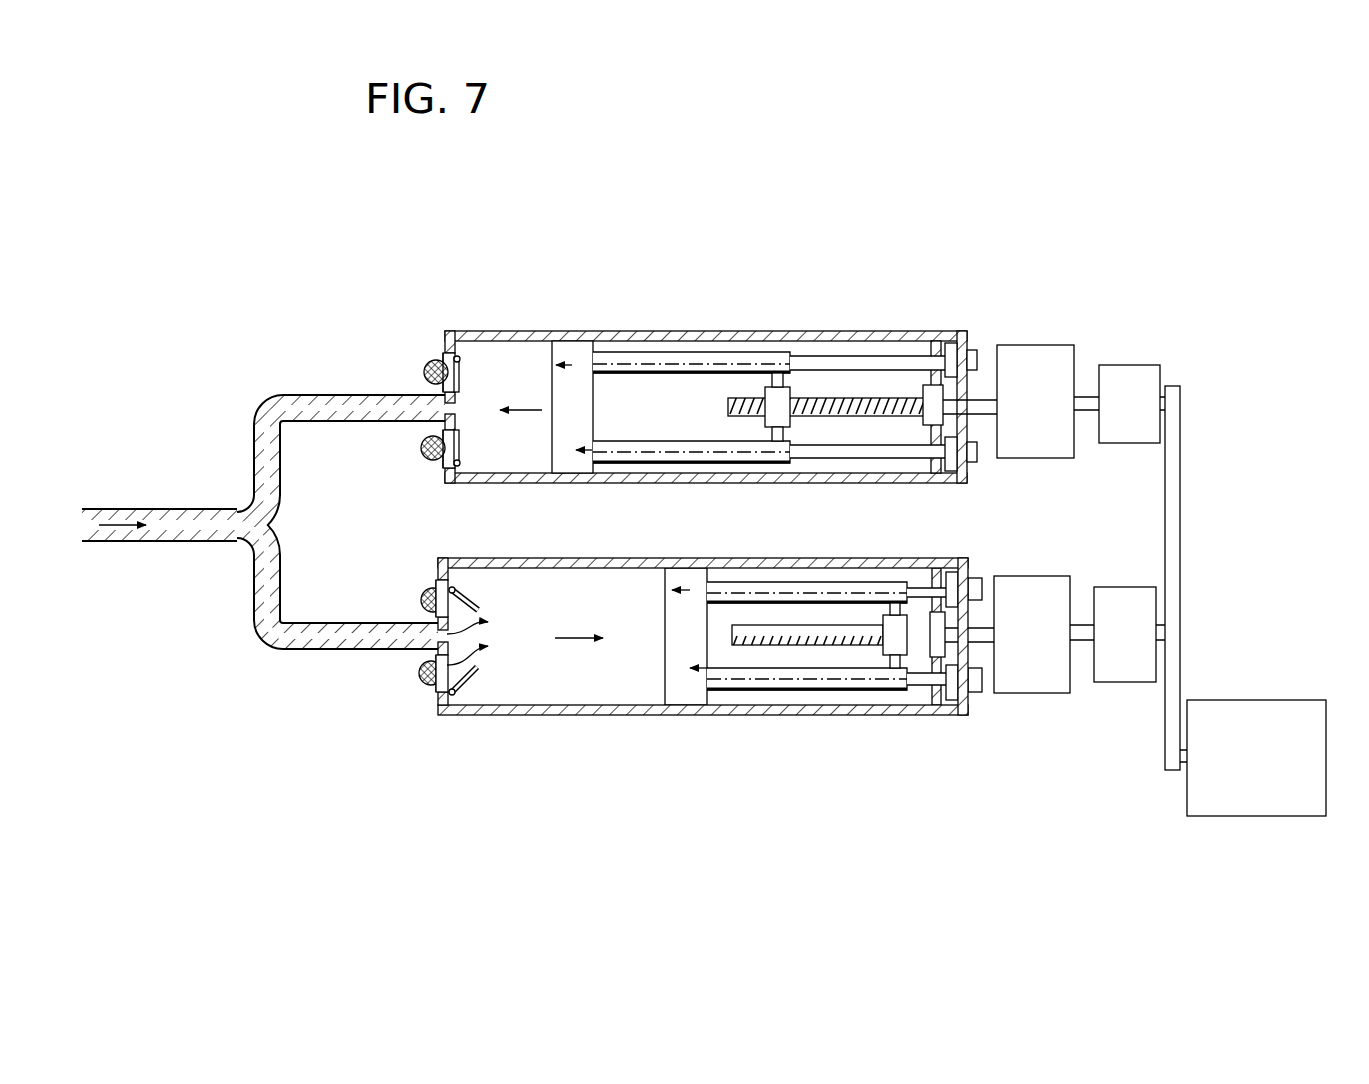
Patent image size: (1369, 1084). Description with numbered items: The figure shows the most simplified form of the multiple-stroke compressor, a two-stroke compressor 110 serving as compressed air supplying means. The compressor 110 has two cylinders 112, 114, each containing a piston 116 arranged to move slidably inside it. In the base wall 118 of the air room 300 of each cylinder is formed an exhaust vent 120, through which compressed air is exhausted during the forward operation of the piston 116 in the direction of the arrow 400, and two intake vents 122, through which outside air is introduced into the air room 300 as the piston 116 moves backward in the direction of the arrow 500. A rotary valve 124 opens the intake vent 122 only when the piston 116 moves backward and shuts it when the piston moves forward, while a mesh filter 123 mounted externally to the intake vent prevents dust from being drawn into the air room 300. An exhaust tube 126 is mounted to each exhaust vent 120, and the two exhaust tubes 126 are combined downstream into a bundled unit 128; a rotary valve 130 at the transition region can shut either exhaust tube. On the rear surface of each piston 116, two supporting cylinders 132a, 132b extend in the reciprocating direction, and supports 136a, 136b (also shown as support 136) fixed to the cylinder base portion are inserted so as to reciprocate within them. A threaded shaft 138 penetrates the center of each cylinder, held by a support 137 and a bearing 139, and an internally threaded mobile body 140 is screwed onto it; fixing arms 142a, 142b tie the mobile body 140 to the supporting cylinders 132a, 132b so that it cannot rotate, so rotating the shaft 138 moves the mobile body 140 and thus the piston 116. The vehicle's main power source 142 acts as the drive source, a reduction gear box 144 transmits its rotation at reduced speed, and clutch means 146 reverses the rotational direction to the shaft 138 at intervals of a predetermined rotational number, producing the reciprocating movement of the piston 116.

The compressor 110 is at (726, 198).
The cylinder 112 is at (862, 331).
The cylinder 114 is at (795, 540).
The piston 116 is at (553, 341).
The base wall 118 is at (432, 358).
The exhaust vent 120 is at (480, 628).
The intake vent 122 is at (428, 362).
The mesh filter 123 is at (426, 376).
The rotary valve 124 is at (458, 356).
The exhaust tube 126 is at (258, 402).
The bundled unit 128 is at (115, 541).
The rotary valve 130 is at (232, 503).
The supporting cylinder 132a is at (700, 352).
The supporting cylinder 132b is at (620, 440).
The support 136 is at (920, 476).
The support 136a is at (945, 360).
The support 136b is at (955, 700).
The support 137 is at (957, 328).
The shaft 138 is at (850, 397).
The bearing 139 is at (925, 425).
The mobile body 140 is at (780, 387).
The main power source 142 is at (1252, 686).
The fixing arm 142a is at (770, 372).
The fixing arm 142b is at (770, 442).
The reduction gear box 144 is at (1135, 365).
The clutch means 146 is at (1030, 345).
The air room 300 is at (520, 331).
The arrow 400 is at (527, 413).
The arrow 500 is at (578, 645).